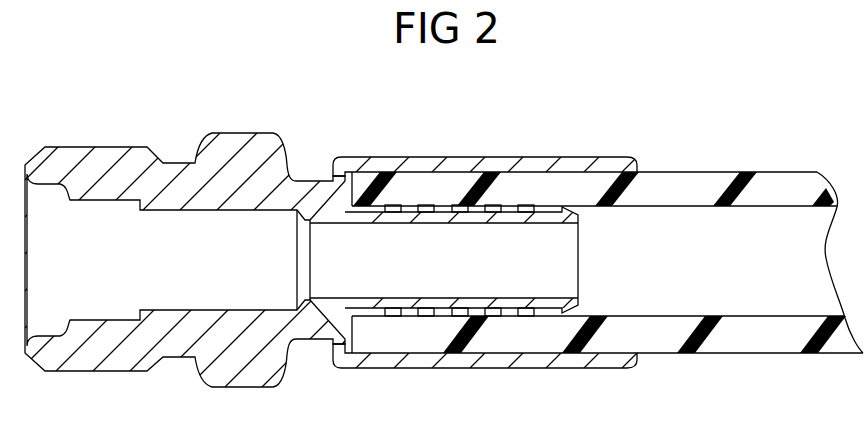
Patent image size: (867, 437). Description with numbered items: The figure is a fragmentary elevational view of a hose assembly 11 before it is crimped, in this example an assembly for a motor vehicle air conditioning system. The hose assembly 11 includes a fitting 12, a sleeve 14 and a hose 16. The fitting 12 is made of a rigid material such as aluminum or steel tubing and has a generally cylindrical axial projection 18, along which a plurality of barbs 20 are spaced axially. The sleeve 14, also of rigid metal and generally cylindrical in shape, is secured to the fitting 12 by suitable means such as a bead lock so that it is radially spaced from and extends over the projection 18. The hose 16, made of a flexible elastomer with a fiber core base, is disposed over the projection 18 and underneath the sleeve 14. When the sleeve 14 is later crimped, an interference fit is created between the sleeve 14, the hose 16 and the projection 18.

The hose assembly 11 is at (203, 105).
The fitting 12 is at (264, 145).
The sleeve 14 is at (438, 160).
The hose 16 is at (722, 342).
The projection 18 is at (552, 210).
The barbs 20 is at (447, 207).